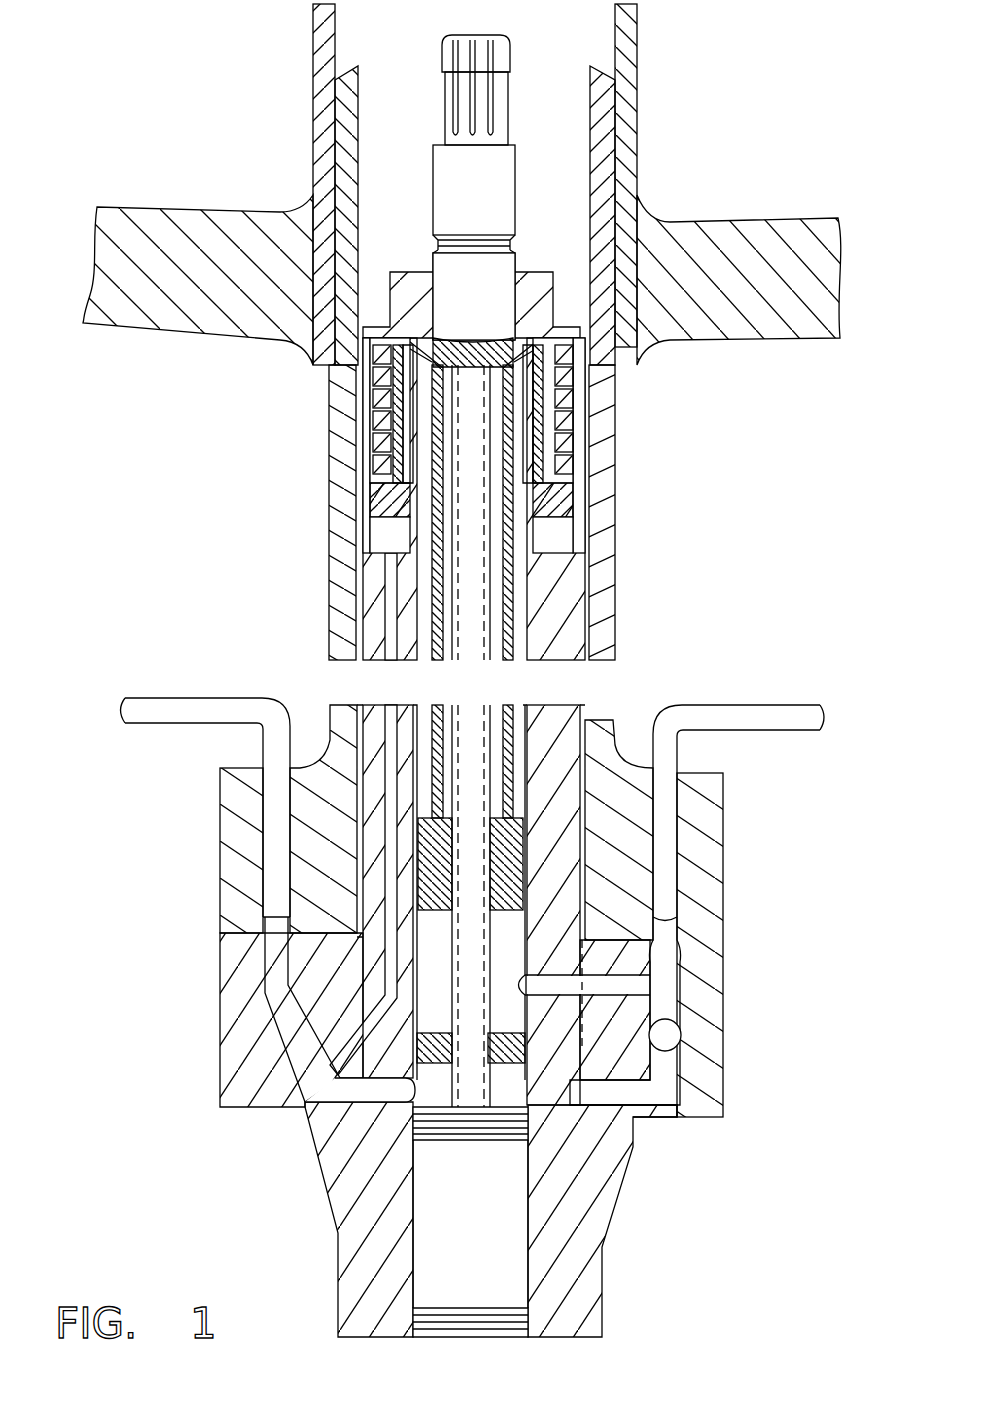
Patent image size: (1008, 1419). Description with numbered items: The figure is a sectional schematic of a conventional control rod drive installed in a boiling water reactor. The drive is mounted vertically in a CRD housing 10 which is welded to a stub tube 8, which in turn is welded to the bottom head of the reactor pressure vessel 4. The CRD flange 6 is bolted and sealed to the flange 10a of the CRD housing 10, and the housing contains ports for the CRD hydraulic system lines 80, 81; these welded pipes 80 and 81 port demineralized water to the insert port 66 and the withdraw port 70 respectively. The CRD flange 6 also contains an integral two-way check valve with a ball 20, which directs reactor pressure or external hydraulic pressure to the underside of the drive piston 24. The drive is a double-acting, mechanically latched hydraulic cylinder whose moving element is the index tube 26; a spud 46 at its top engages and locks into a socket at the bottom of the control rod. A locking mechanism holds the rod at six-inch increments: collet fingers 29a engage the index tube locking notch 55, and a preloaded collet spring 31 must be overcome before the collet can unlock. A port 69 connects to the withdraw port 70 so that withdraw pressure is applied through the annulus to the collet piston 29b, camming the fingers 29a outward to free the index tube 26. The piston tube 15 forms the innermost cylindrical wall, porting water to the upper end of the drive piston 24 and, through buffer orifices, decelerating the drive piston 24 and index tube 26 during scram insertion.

The reactor pressure vessel 4 is at (226, 210).
The CRD flange 6 is at (605, 1275).
The stub tube 8 is at (640, 113).
The CRD housing 10 is at (343, 607).
The flange of the CRD housing 10a is at (722, 905).
The piston tube 15 is at (517, 587).
The ball 20 is at (682, 1035).
The drive piston 24 is at (528, 872).
The index tube 26 is at (530, 632).
The collet fingers 29a is at (560, 378).
The collet piston 29b is at (380, 500).
The collet spring 31 is at (372, 448).
The spud 46 is at (512, 50).
The index tube locking notch 55 is at (530, 712).
The insert port 66 is at (678, 930).
The port 69 is at (318, 1108).
The withdraw port 70 is at (273, 955).
The hydraulic system line 80 is at (765, 703).
The hydraulic system line 81 is at (166, 697).